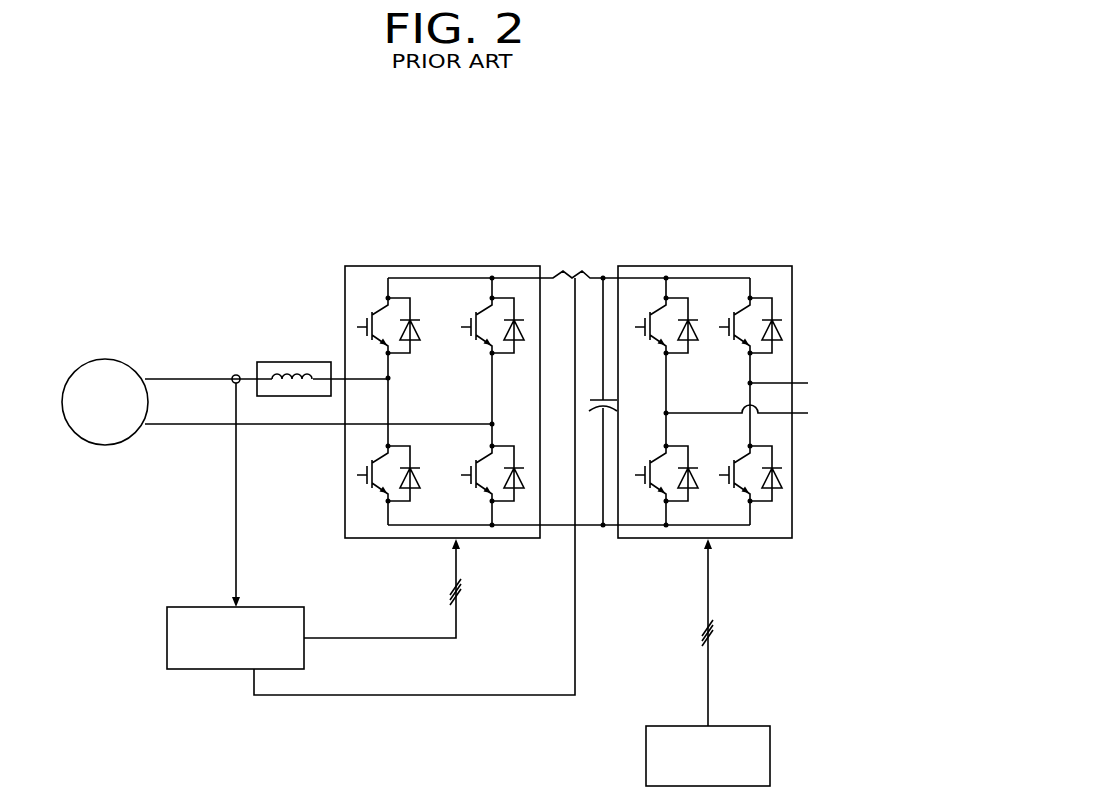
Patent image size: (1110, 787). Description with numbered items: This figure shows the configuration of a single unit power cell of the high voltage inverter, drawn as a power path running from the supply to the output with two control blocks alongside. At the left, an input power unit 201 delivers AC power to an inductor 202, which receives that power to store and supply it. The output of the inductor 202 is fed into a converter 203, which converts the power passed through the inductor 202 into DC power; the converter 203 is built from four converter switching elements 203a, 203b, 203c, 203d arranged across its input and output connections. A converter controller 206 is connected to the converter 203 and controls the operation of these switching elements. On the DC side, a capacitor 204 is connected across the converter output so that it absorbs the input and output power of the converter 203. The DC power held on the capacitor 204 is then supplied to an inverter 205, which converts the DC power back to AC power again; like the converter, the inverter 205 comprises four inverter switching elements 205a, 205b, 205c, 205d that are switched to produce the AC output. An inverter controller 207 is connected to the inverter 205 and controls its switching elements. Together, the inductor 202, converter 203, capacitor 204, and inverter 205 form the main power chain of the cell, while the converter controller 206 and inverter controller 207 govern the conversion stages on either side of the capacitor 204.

The input power unit 201 is at (125, 359).
The inductor 202 is at (285, 362).
The converter 203 is at (415, 266).
The converter switching element 203a is at (383, 322).
The converter switching element 203b is at (383, 471).
The converter switching element 203c is at (482, 322).
The converter switching element 203d is at (482, 471).
The capacitor 204 is at (590, 401).
The inverter 205 is at (695, 266).
The inverter switching element 205a is at (656, 324).
The inverter switching element 205b is at (656, 472).
The inverter switching element 205c is at (740, 324).
The inverter switching element 205d is at (740, 472).
The converter controller 206 is at (216, 669).
The inverter controller 207 is at (770, 757).